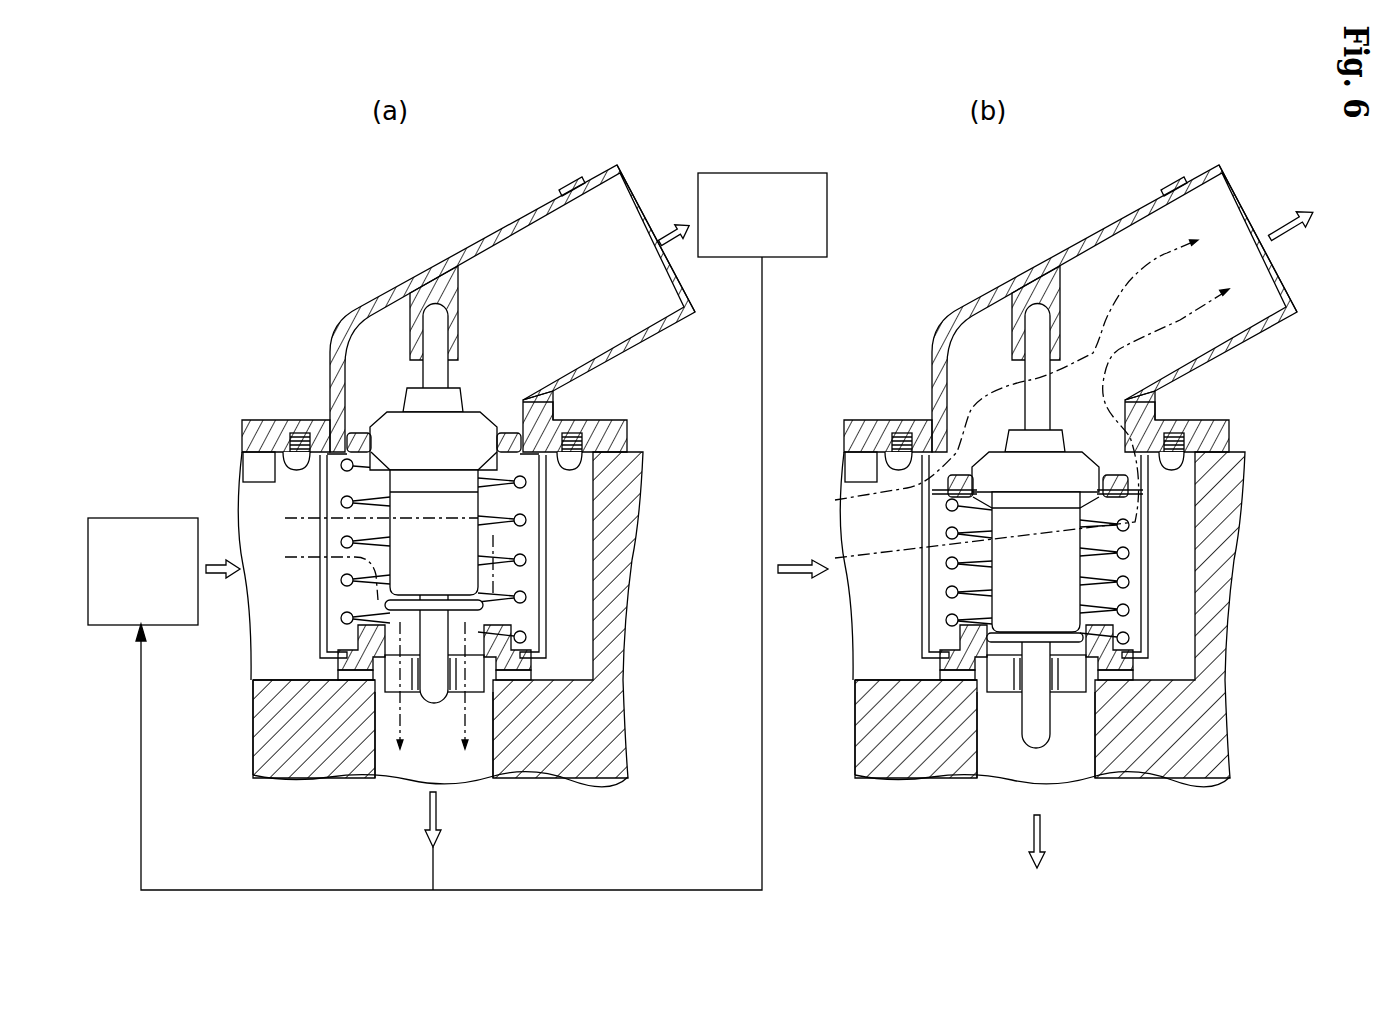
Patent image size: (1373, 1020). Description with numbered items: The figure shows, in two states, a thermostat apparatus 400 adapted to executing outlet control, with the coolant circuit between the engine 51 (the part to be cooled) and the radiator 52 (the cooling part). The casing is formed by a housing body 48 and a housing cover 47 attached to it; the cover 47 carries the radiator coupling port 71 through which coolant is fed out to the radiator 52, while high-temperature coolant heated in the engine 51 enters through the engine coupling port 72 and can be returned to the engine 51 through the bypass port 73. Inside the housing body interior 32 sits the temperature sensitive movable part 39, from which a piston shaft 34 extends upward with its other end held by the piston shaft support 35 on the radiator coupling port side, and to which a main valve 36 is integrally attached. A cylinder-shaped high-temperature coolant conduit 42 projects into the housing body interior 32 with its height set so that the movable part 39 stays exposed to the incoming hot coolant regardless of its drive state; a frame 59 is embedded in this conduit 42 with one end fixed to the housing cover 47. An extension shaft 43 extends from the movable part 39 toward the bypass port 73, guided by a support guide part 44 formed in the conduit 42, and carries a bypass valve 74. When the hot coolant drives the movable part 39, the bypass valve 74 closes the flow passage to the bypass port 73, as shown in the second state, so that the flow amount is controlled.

The thermostat apparatus 400 is at (299, 361).
The housing cover 47 is at (577, 175).
The piston shaft support 35 is at (417, 290).
The piston shaft 34 is at (432, 310).
The radiator coupling port 71 is at (498, 407).
The housing body interior 32 is at (580, 490).
The housing body 48 is at (588, 728).
The extension shaft 43 is at (256, 747).
The support guide part 44 is at (322, 672).
The bypass port 73 is at (482, 730).
The engine coupling port 72 is at (256, 668).
The high-temperature coolant conduit 42 is at (372, 640).
The frame 59 is at (548, 553).
The temperature sensitive movable part 39 is at (413, 508).
The bypass valve 74 is at (486, 606).
The main valve 36 is at (342, 445).
The engine 51 is at (140, 518).
The radiator 52 is at (828, 215).